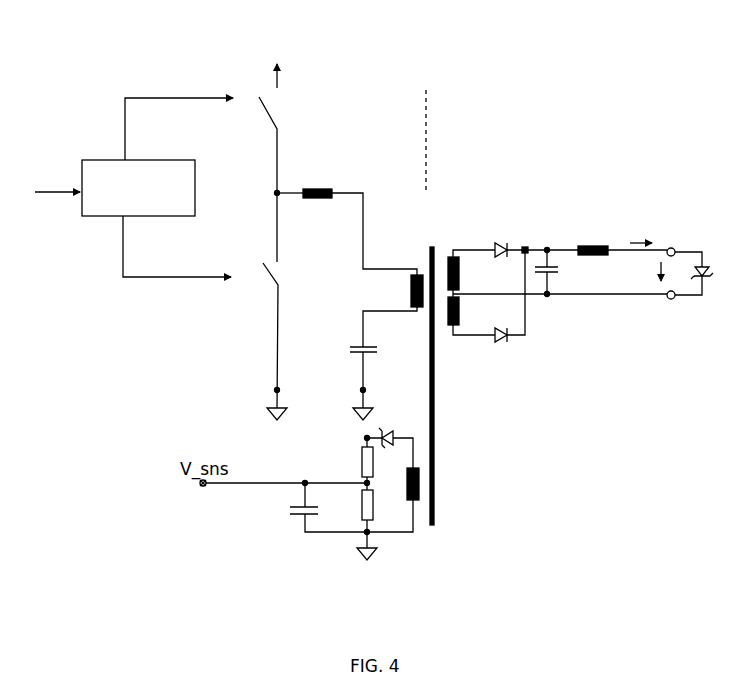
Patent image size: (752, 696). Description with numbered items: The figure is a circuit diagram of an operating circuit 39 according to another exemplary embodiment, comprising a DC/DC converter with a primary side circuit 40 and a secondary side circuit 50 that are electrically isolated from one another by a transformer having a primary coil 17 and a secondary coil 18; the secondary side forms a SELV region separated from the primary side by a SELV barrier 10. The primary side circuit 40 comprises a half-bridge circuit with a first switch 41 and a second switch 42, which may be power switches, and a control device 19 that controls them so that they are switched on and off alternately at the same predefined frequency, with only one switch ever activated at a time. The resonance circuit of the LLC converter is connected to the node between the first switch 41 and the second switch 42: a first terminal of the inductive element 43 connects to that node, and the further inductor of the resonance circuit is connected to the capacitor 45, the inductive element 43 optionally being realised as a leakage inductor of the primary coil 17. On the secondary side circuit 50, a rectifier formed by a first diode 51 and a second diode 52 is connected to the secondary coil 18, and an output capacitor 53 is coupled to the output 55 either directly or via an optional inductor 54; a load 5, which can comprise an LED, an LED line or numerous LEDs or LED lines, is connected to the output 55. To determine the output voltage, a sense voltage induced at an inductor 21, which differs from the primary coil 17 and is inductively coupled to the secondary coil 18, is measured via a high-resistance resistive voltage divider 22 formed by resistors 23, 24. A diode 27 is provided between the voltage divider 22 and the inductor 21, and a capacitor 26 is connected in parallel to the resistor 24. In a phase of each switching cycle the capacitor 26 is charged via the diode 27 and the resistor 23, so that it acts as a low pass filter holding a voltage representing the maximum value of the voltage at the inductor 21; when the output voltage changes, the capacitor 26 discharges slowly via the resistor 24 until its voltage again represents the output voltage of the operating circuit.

The operating circuit 39 is at (73, 62).
The control device 19 is at (147, 205).
The primary side circuit 40 is at (190, 88).
The first switch 41 is at (255, 111).
The second switch 42 is at (258, 274).
The inductive element 43 is at (320, 188).
The capacitor 45 is at (360, 358).
The primary coil 17 is at (410, 324).
The SELV barrier 10 is at (424, 118).
The secondary coil 18 is at (445, 256).
The secondary side circuit 50 is at (500, 157).
The first diode 51 is at (500, 243).
The second diode 52 is at (505, 342).
The output capacitor 53 is at (560, 275).
The inductor 54 is at (598, 245).
The output 55 is at (673, 249).
The load 5 is at (704, 266).
The inductor 21 is at (407, 510).
The voltage divider 22 is at (360, 524).
The resistor 23 is at (362, 470).
The resistor 24 is at (370, 490).
The capacitor 26 is at (300, 518).
The diode 27 is at (393, 432).